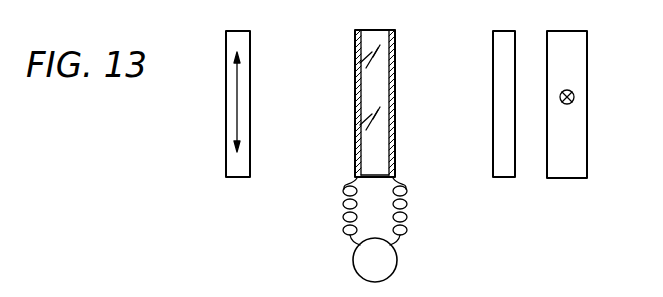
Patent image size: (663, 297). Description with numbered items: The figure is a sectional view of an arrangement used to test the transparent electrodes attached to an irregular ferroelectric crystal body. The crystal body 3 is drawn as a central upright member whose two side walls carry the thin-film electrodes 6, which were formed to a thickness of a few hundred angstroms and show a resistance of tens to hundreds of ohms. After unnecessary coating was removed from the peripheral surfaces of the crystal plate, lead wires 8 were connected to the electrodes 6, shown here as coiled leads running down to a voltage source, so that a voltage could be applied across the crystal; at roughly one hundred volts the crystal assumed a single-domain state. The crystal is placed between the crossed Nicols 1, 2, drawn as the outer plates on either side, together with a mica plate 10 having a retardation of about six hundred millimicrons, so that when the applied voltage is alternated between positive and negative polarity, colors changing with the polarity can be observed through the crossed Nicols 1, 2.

The crossed Nicol 1 is at (236, 178).
The tube 3 is at (374, 42).
The electrode 6 is at (395, 48).
The lead wire 8 is at (346, 234).
The mica plate 10 is at (506, 178).
The crossed Nicol 2 is at (566, 179).